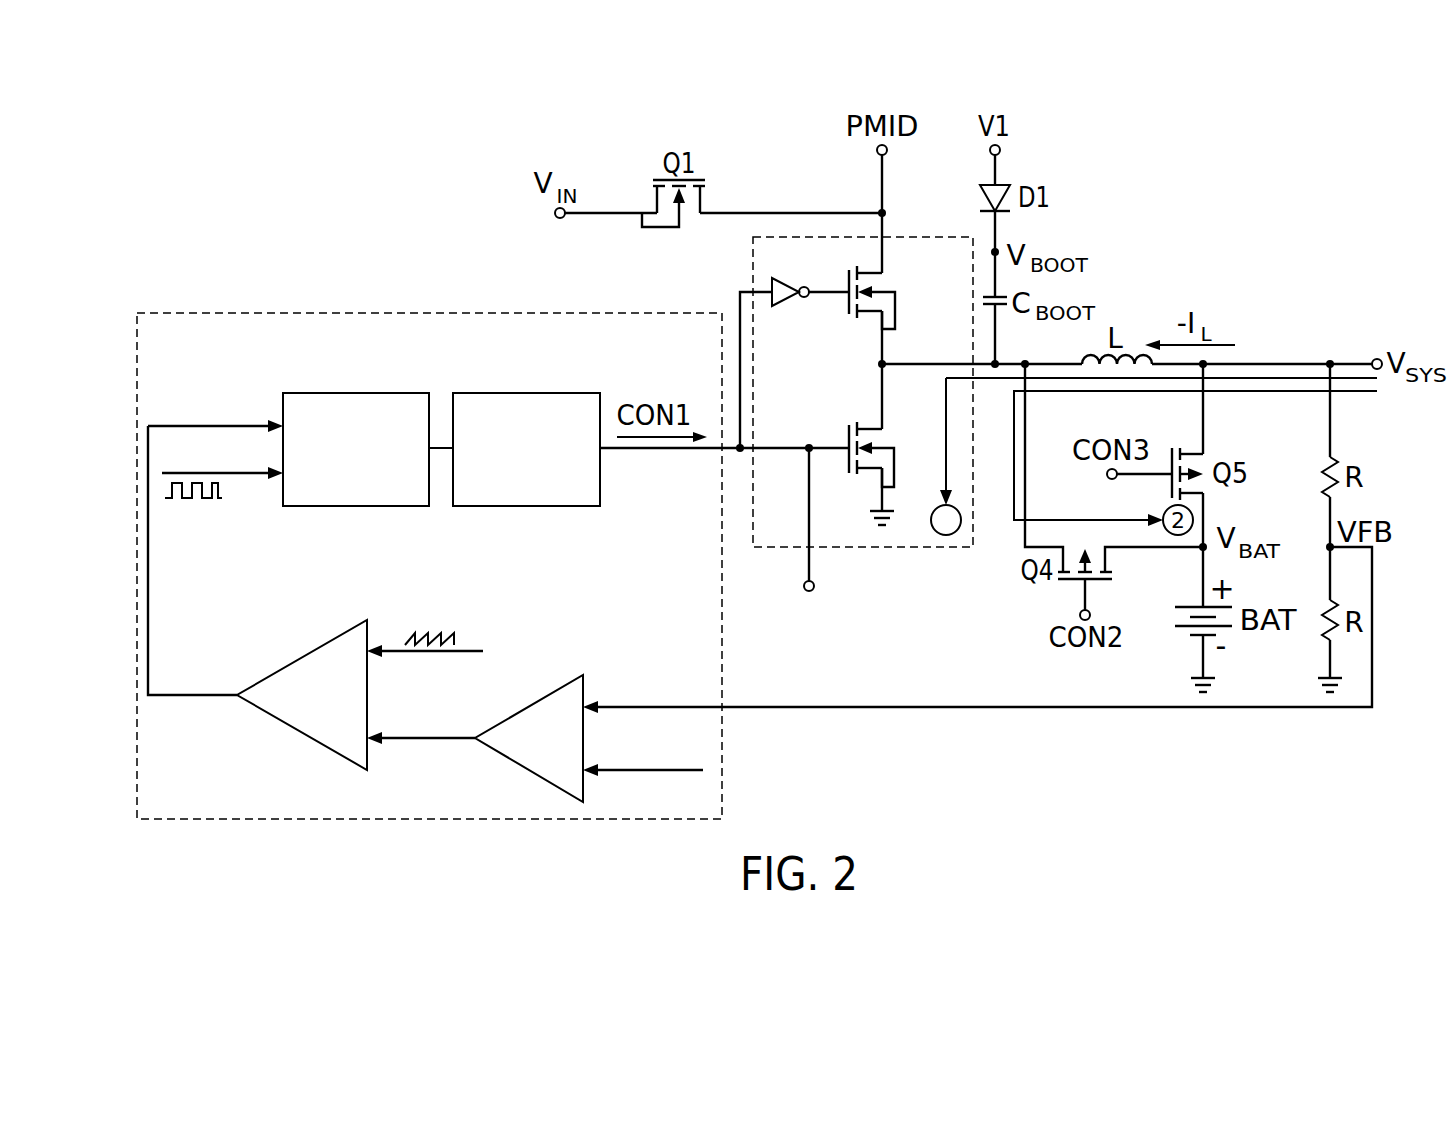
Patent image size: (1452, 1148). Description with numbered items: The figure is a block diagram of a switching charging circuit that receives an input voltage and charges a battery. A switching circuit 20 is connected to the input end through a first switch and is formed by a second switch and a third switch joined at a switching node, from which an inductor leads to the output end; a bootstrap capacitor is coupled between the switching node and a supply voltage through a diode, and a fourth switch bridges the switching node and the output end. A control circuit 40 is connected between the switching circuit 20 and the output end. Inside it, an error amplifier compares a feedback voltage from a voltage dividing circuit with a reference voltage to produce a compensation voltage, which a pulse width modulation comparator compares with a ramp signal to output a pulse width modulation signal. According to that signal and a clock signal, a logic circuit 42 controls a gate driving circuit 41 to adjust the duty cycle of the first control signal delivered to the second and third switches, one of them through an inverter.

The switching circuit 20 is at (873, 547).
The control circuit 40 is at (723, 657).
The gate driving circuit 41 is at (525, 393).
The logic circuit 42 is at (355, 393).